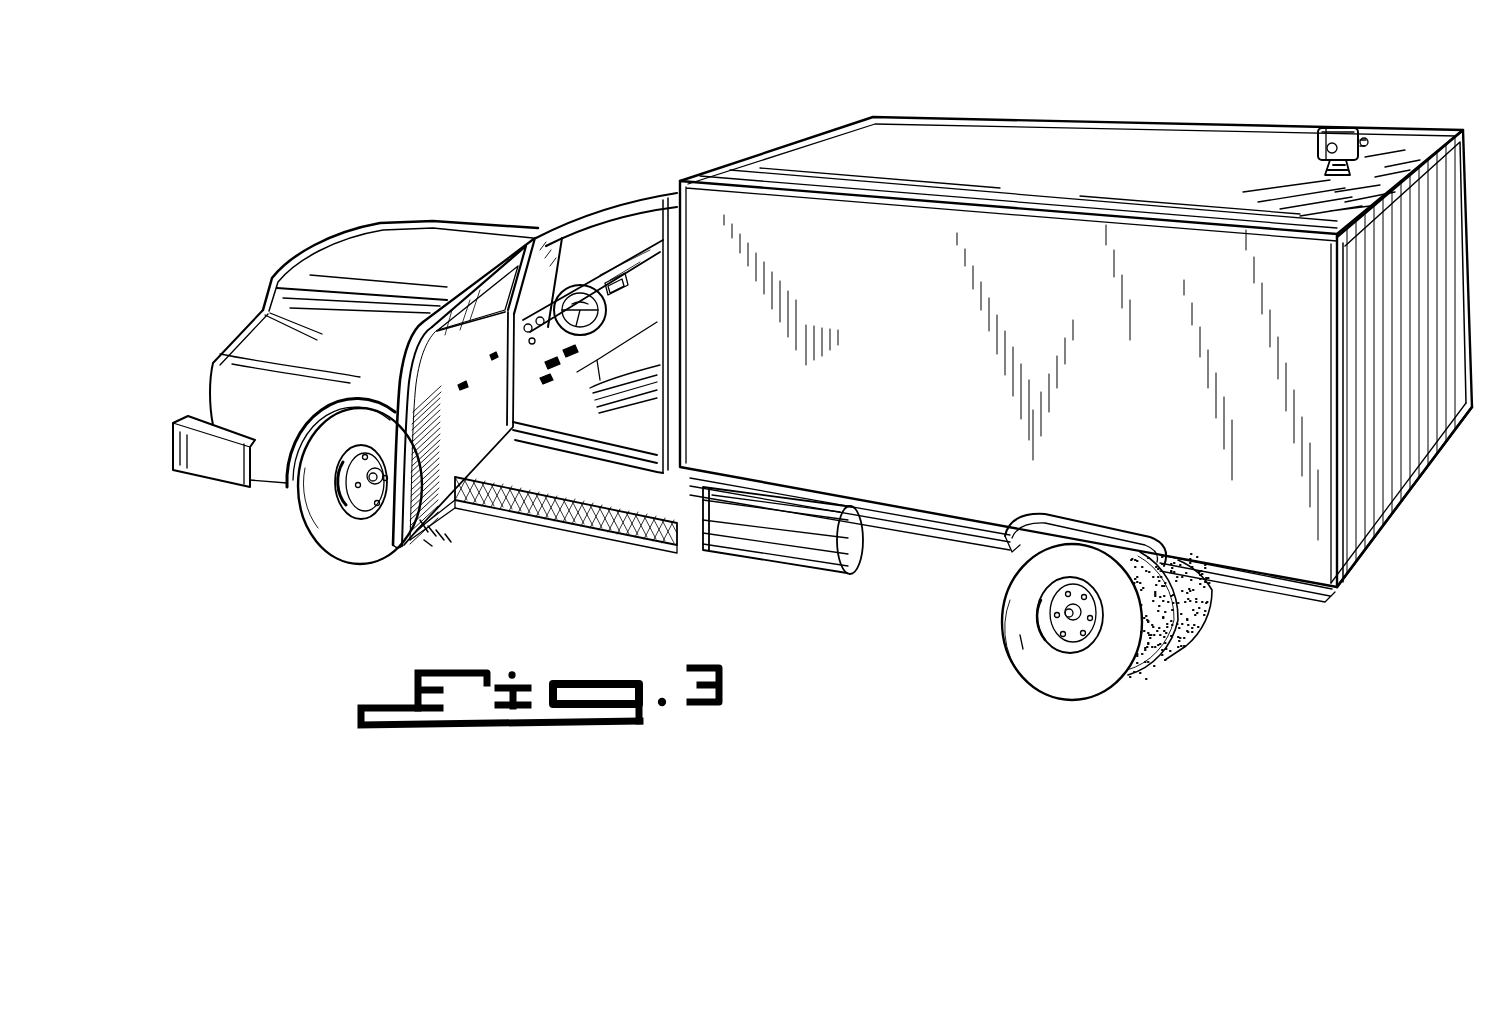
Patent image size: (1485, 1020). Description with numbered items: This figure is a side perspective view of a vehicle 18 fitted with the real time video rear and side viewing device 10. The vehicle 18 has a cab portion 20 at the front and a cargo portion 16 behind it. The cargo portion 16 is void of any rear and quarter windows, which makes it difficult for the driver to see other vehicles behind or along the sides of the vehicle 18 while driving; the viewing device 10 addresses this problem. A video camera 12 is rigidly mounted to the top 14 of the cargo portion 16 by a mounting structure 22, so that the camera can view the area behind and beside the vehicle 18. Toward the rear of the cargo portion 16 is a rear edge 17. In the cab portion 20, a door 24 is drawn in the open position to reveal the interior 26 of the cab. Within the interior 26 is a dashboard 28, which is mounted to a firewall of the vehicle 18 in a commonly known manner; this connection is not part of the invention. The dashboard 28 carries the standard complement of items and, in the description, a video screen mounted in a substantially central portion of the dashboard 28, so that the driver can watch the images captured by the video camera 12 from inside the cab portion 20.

The real time video rear and side viewing device 10 is at (779, 121).
The video camera 12 is at (1350, 128).
The top 14 is at (882, 133).
The cargo portion 16 is at (956, 457).
The rear edge 17 is at (1398, 512).
The vehicle 18 is at (1028, 160).
The cab portion 20 is at (413, 236).
The mounting structure 22 is at (1330, 175).
The door 24 is at (413, 343).
The interior 26 is at (563, 388).
The dashboard 28 is at (648, 255).